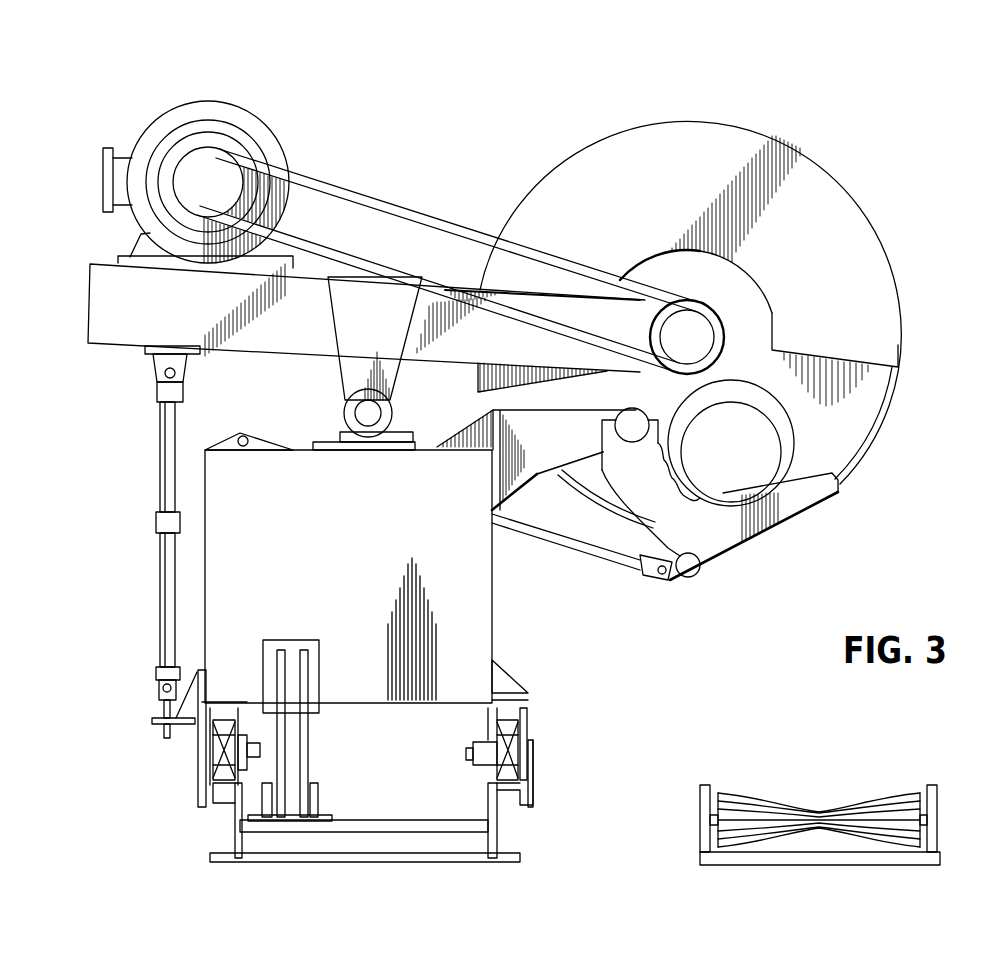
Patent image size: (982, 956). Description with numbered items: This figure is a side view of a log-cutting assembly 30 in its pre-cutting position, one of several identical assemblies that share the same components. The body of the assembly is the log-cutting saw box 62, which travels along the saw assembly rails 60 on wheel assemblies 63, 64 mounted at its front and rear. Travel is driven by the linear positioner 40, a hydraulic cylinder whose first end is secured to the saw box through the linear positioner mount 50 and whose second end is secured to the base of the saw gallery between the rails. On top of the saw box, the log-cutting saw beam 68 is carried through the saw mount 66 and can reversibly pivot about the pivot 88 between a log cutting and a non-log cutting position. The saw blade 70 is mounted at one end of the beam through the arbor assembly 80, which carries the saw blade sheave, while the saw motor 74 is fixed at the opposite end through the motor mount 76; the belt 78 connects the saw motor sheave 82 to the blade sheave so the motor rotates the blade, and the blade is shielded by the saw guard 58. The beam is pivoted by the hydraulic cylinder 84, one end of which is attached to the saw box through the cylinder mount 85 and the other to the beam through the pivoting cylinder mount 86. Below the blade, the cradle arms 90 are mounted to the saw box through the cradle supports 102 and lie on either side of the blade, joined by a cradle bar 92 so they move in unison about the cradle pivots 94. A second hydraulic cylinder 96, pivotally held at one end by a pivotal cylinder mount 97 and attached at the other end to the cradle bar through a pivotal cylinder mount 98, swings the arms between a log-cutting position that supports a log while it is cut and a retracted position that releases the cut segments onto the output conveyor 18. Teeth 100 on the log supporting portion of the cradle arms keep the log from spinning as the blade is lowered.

The log-cutting assembly 30 is at (468, 125).
The saw motor 74 is at (170, 110).
The saw motor sheave 82 is at (214, 148).
The belt 78 is at (412, 180).
The motor mount 76 is at (130, 252).
The log-cutting saw beam 68 is at (287, 337).
The pivoting cylinder mount 86 is at (151, 363).
The hydraulic cylinder 84 is at (162, 575).
The cylinder mount 85 is at (162, 705).
The wheel assembly 64 is at (190, 773).
The wheel assembly 63 is at (538, 728).
The saw assembly rails 60 is at (232, 812).
The linear positioner mount 50 is at (316, 662).
The linear positioner 40 is at (287, 788).
The log-cutting saw box 62 is at (493, 603).
The pivotal cylinder mount 97 is at (242, 430).
The saw mount 66 is at (347, 410).
The pivot 88 is at (376, 413).
The cradle supports 102 is at (530, 478).
The saw guard 58 is at (828, 173).
The arbor assembly 80 is at (712, 320).
The saw blade 70 is at (870, 403).
The cradle arms 90 is at (786, 527).
The cradle pivots 94 is at (630, 432).
The hydraulic cylinder 96 is at (588, 550).
The pivotal cylinder mount 98 is at (647, 580).
The cradle bar 92 is at (698, 570).
The teeth 100 is at (680, 505).
The output conveyor 18 is at (888, 765).